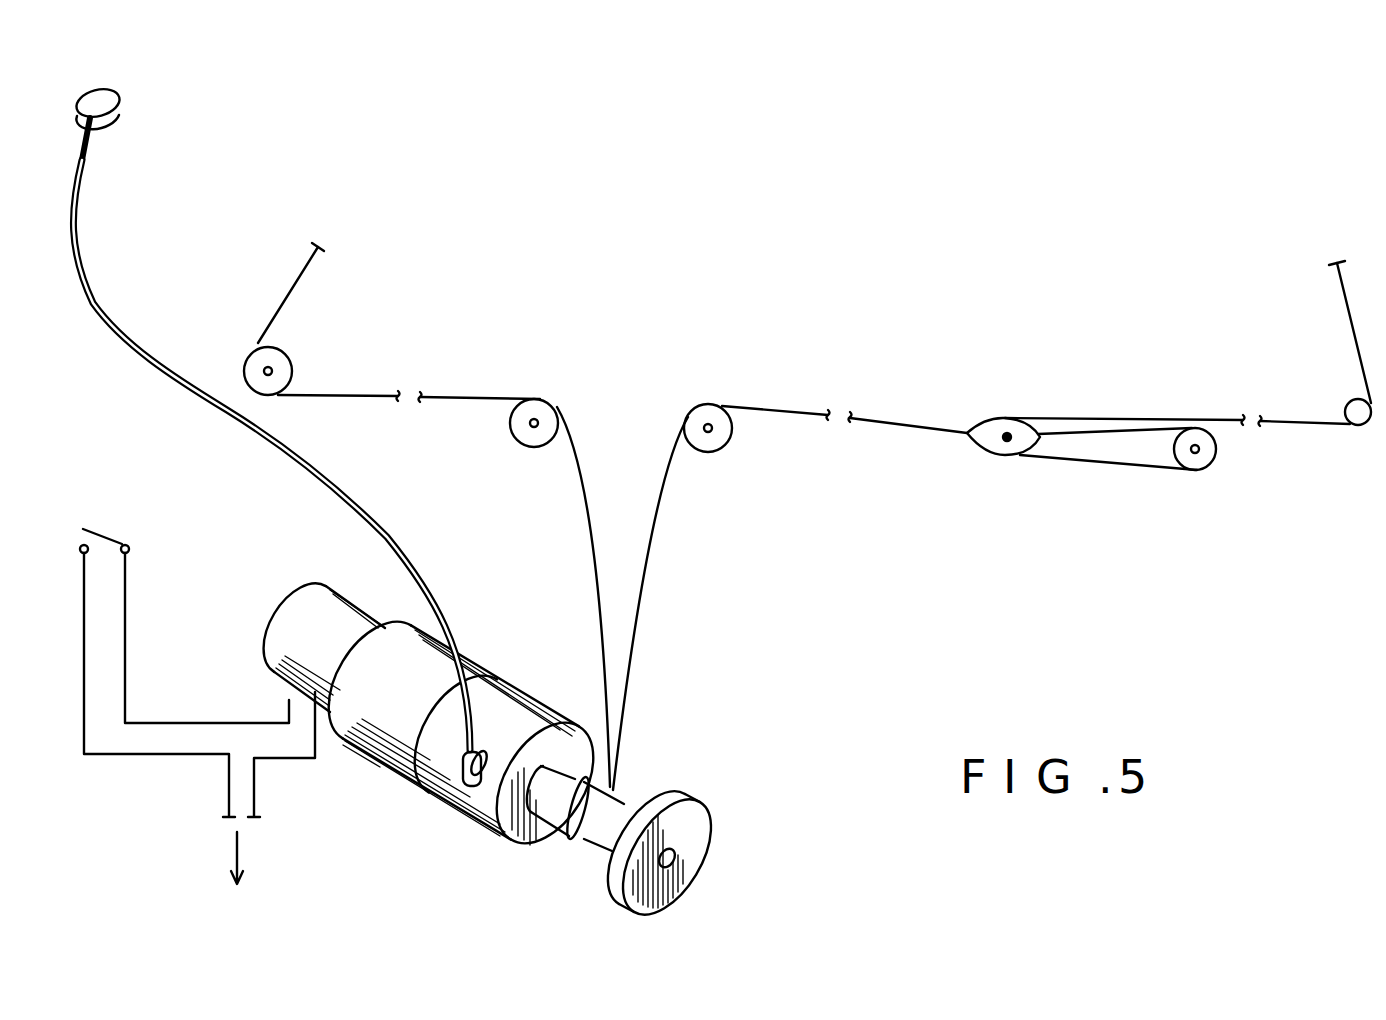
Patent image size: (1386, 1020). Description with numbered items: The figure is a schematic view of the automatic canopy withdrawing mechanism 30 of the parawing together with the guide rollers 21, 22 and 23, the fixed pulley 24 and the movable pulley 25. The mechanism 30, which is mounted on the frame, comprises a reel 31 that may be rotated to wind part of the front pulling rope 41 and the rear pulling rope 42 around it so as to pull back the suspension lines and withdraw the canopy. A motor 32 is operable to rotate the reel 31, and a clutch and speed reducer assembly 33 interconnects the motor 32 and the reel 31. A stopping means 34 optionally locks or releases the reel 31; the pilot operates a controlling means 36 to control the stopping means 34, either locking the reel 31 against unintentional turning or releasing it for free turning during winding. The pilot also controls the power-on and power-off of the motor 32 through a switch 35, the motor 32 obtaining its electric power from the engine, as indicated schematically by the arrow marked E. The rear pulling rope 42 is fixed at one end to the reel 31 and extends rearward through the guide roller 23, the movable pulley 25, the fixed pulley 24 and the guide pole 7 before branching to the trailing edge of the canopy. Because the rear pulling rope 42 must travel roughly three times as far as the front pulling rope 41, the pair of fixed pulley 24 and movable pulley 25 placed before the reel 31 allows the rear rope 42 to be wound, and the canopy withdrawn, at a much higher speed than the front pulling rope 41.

The guide pole 7 is at (1362, 428).
The guide roller 21 is at (287, 352).
The guide roller 22 is at (545, 407).
The guide roller 23 is at (720, 443).
The fixed pulley 24 is at (1208, 467).
The movable pulley 25 is at (987, 447).
The automatic canopy withdrawing mechanism 30 is at (455, 808).
The reel 31 is at (633, 793).
The motor 32 is at (319, 599).
The clutch and speed reducer assembly 33 is at (372, 740).
The stopping means 34 is at (527, 707).
The switch 35 is at (109, 537).
The controlling means 36 is at (112, 100).
The front pulling rope 41 is at (288, 293).
The rear pulling rope 42 is at (1348, 322).